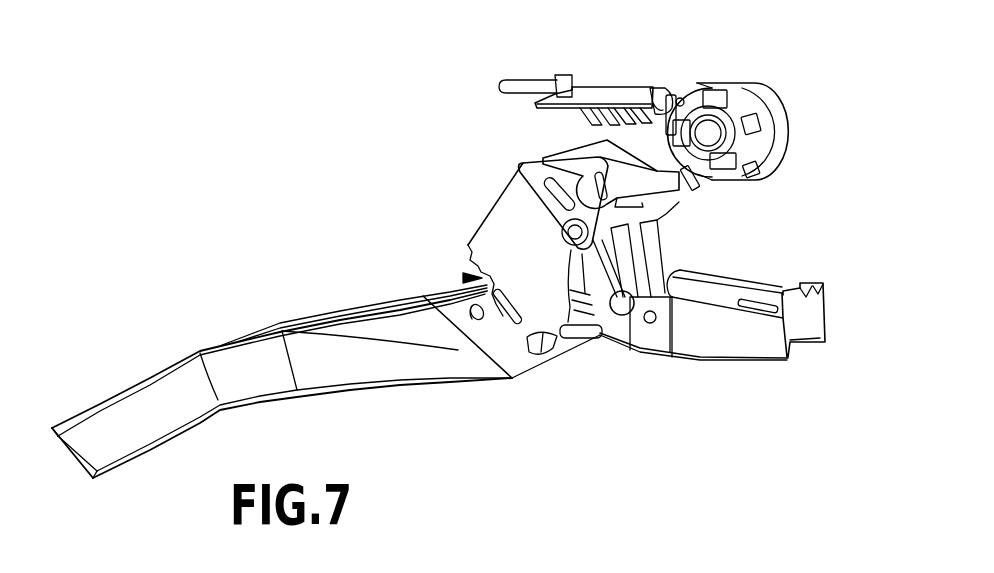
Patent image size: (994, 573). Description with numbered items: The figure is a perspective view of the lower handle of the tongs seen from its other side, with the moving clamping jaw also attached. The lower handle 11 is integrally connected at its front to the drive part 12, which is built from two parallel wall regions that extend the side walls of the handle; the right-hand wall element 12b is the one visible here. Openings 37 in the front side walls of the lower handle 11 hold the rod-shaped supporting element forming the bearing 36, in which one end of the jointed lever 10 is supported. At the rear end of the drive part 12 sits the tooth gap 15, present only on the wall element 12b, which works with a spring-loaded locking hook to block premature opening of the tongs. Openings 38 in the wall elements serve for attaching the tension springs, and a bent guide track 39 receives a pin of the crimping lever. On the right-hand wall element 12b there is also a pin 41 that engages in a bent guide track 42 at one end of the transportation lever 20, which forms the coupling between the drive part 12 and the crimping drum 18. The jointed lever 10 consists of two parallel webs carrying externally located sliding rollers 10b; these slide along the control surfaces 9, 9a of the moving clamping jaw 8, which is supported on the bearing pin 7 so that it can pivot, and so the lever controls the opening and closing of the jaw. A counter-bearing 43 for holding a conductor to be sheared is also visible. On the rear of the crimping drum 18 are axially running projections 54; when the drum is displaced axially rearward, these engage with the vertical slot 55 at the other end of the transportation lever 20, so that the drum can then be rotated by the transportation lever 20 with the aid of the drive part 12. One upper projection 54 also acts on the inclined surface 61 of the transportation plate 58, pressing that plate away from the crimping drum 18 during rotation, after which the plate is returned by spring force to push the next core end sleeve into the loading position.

The bearing pin 7 is at (658, 322).
The moving clamping jaw 8 is at (807, 355).
The control surface 9 is at (622, 310).
The control surface 9a is at (578, 338).
The jointed lever 10 is at (640, 240).
The sliding rollers 10b is at (672, 275).
The lower handle 11 is at (135, 397).
The drive part 12 is at (462, 278).
The right-hand wall element 12b is at (517, 235).
The tooth gap 15 is at (472, 256).
The crimping drum 18 is at (770, 92).
The transportation lever 20 is at (662, 197).
The bearing 36 is at (668, 210).
The openings 37 is at (470, 316).
The openings 38 is at (530, 168).
The bent guide track 39 is at (547, 196).
The pin 41 is at (580, 155).
The bent guide track 42 is at (596, 172).
The counter-bearing 43 is at (527, 352).
The projections 54 is at (684, 100).
The vertical slot 55 is at (703, 186).
The transportation plate 58 is at (598, 86).
The inclined surface 61 is at (652, 87).